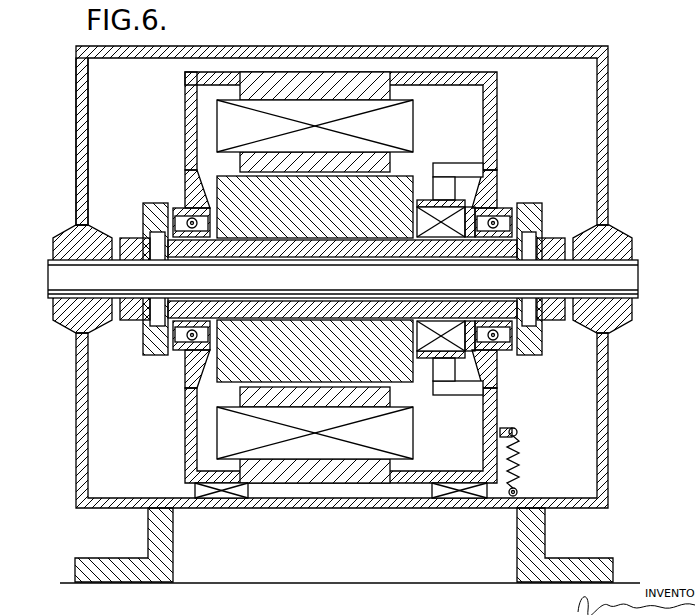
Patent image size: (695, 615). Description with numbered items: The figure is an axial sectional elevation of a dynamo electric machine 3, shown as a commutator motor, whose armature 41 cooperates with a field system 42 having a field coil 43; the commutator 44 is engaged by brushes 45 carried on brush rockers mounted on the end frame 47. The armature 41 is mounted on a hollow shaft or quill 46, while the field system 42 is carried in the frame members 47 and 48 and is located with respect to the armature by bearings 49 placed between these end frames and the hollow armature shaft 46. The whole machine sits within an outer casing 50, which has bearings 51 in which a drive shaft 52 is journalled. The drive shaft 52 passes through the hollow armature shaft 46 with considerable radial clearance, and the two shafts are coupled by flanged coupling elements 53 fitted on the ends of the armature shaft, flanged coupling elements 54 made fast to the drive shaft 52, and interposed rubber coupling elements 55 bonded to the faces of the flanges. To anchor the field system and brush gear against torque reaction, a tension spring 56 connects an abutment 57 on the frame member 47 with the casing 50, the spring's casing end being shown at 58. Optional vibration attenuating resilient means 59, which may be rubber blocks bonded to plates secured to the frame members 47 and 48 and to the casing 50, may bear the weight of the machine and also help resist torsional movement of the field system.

The motor unit 3 is at (604, 172).
The armature 41 is at (400, 190).
The field system 42 is at (358, 90).
The field coil 43 is at (222, 115).
The commutator 44 is at (452, 192).
The brushes 45 is at (441, 186).
The hollow shaft or quill 46 is at (208, 345).
The frame member 47 is at (492, 102).
The frame member 48 is at (187, 90).
The bearings 49 is at (186, 212).
The outer casing 50 is at (83, 138).
The bearings 51 is at (66, 240).
The drive shaft 52 is at (74, 322).
The flanged coupling elements 53 is at (170, 205).
The flanged coupling elements 54 is at (127, 319).
The rubber coupling elements 55 is at (145, 216).
The tension spring 56 is at (520, 458).
The abutment 57 is at (514, 428).
The spring anchor 58 is at (520, 492).
The vibration attenuating resilient means 59 is at (229, 499).